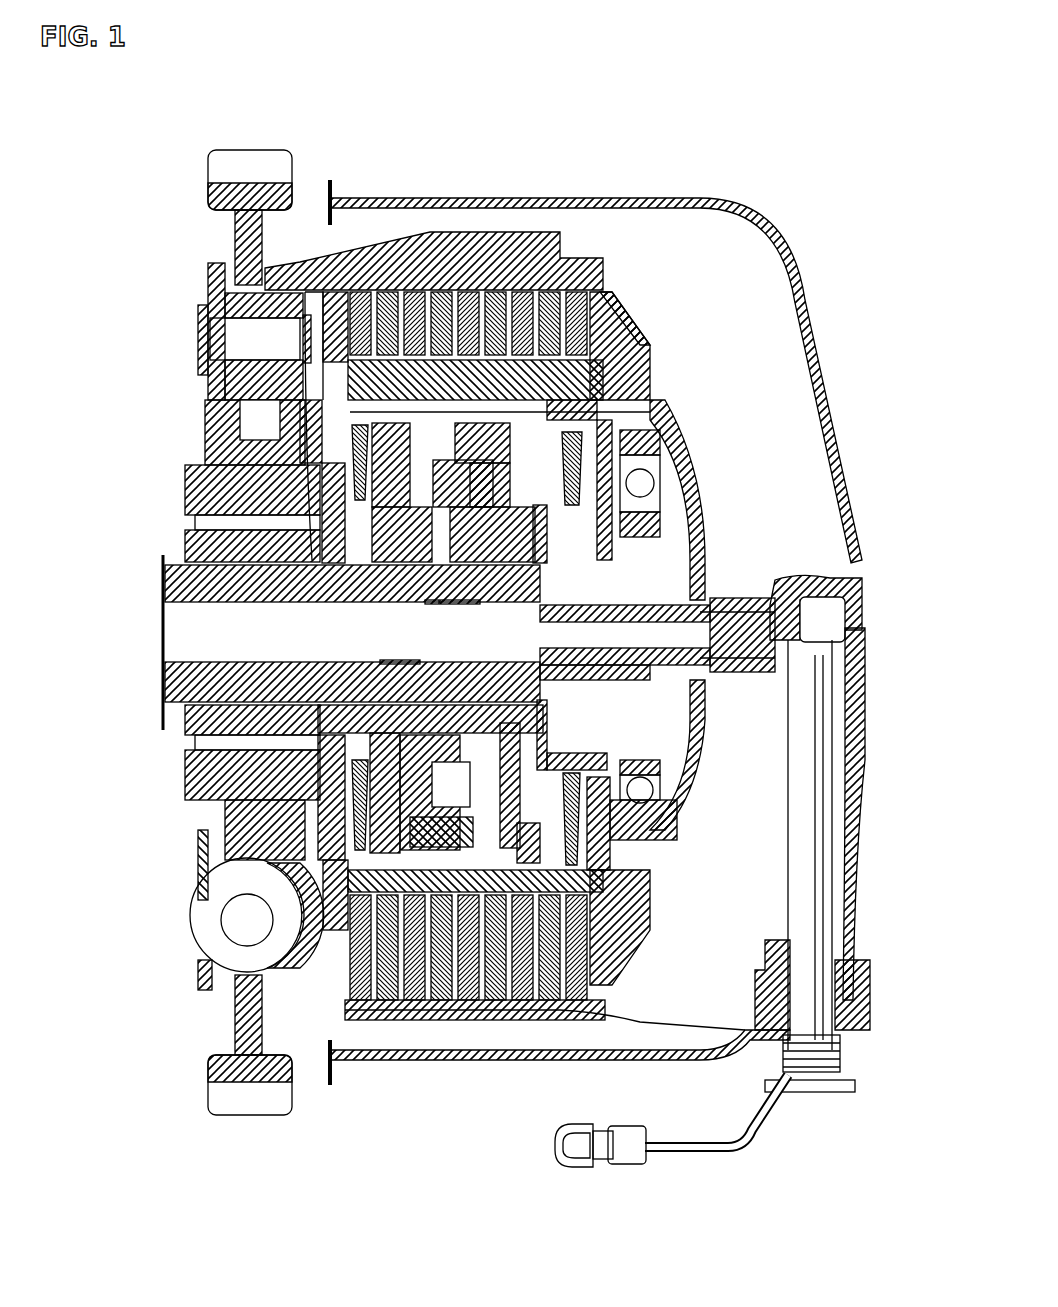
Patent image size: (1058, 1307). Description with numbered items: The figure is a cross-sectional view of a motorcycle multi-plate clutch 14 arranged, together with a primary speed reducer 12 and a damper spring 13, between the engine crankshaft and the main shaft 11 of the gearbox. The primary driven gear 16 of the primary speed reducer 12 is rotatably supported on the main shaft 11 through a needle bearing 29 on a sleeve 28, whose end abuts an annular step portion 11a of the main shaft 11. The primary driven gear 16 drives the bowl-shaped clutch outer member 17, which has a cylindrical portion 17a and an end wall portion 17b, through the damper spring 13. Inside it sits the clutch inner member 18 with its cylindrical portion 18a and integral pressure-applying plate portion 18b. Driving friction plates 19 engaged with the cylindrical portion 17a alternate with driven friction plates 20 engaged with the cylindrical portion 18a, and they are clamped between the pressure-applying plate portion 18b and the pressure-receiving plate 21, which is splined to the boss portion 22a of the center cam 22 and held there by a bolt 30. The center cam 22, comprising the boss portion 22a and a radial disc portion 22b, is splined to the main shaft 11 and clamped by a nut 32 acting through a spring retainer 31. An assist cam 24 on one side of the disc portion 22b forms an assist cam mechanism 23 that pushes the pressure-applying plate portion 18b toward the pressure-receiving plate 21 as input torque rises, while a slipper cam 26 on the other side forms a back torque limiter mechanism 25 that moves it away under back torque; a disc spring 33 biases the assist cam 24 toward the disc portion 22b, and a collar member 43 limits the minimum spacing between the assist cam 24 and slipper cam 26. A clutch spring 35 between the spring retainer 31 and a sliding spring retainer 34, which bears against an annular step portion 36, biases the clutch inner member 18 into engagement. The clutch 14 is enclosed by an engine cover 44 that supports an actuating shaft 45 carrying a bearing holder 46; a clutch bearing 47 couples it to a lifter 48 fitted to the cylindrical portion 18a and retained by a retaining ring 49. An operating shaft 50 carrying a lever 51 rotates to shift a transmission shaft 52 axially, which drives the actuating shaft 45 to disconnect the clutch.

The main shaft 11 is at (172, 700).
The annular step portion 11a is at (212, 812).
The primary speed reducer 12 is at (296, 182).
The damper spring 13 is at (230, 945).
The multi-plate clutch 14 is at (662, 355).
The primary driven gear 16 is at (258, 163).
The clutch outer member 17 is at (520, 232).
The cylindrical portion 17a is at (415, 255).
The end wall portion 17b is at (250, 405).
The clutch inner member 18 is at (660, 390).
The cylindrical portion 18a is at (480, 330).
The pressure-applying plate portion 18b is at (620, 325).
The driving friction plates 19 is at (440, 1010).
The driven friction plates 20 is at (522, 1010).
The pressure-receiving plate 21 is at (335, 330).
The center cam 22 is at (396, 602).
The boss portion 22a is at (455, 600).
The disc portion 22b is at (585, 745).
The assist cam mechanism 23 is at (432, 662).
The assist cam 24 is at (400, 665).
The back torque limiter mechanism 25 is at (470, 520).
The slipper cam 26 is at (565, 480).
The sleeve 28 is at (222, 575).
The needle bearing 29 is at (240, 522).
The bolt 30 is at (325, 590).
The spring retainer 31 is at (660, 760).
The nut 32 is at (665, 560).
The disc spring 33 is at (235, 472).
The spring retainer 34 is at (600, 462).
The clutch spring 35 is at (665, 452).
The annular step portion 36 is at (602, 385).
The collar member 43 is at (425, 445).
The engine cover 44 is at (822, 378).
The actuating shaft 45 is at (700, 588).
The bearing holder 46 is at (690, 700).
The clutch bearing 47 is at (655, 792).
The lifter 48 is at (652, 835).
The retaining ring 49 is at (640, 910).
The operating shaft 50 is at (835, 828).
The lever 51 is at (688, 1150).
The transmission shaft 52 is at (760, 592).